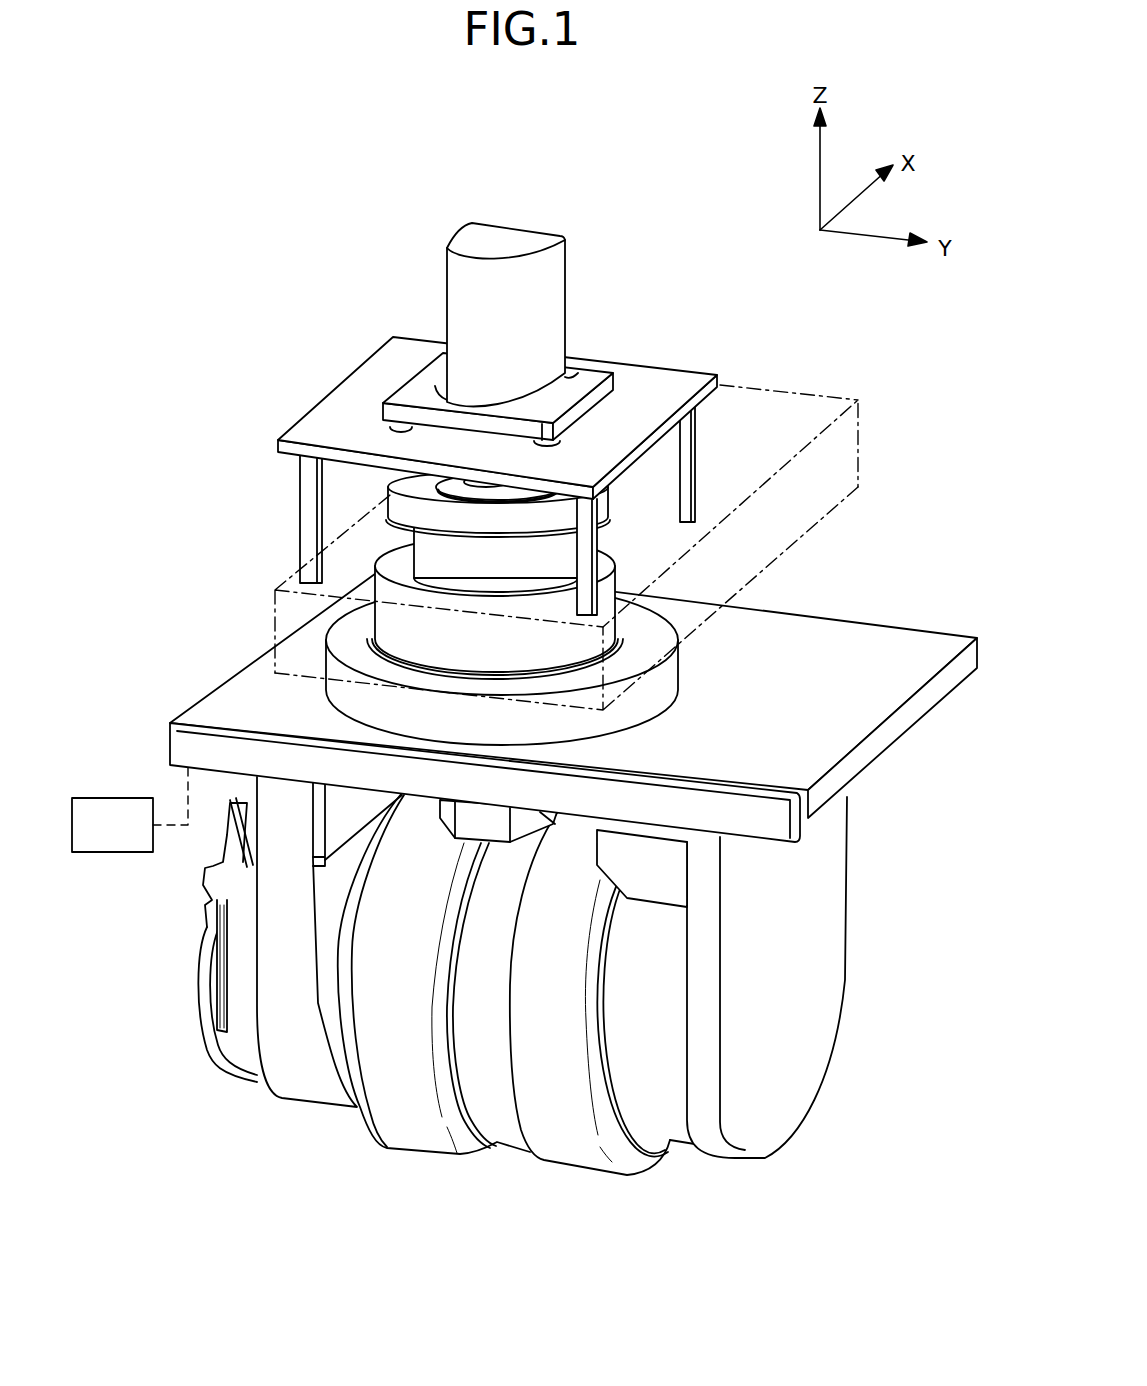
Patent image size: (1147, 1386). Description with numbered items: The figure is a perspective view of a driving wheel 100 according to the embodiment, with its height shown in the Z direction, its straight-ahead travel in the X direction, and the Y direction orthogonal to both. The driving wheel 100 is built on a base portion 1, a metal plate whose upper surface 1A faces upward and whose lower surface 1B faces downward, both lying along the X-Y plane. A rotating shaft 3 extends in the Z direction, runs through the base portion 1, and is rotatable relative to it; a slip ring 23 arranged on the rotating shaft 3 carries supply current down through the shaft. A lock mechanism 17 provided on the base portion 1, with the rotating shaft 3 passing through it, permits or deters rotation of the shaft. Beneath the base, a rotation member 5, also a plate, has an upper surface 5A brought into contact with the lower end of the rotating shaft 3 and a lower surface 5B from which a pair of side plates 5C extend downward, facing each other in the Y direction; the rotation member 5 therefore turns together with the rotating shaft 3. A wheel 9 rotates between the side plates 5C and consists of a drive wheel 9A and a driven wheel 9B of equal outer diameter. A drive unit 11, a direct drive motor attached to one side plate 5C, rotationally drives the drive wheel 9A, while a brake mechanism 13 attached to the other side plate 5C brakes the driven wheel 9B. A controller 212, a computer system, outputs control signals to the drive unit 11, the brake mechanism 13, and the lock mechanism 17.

The driving wheel 100 is at (293, 293).
The base portion 1 is at (860, 431).
The upper surface 1A is at (774, 403).
The lower surface 1B is at (818, 522).
The rotating shaft 3 is at (370, 562).
The slip ring 23 is at (400, 500).
The lock mechanism 17 is at (355, 693).
The rotation member 5 is at (918, 630).
The upper surface 5A is at (850, 645).
The lower surface 5B is at (903, 743).
The side plates 5C is at (283, 1100).
The wheel 9 is at (514, 1027).
The drive wheel 9A is at (572, 1147).
The driven wheel 9B is at (407, 1133).
The drive unit 11 is at (678, 1148).
The brake mechanism 13 is at (207, 1040).
The controller 212 is at (108, 852).